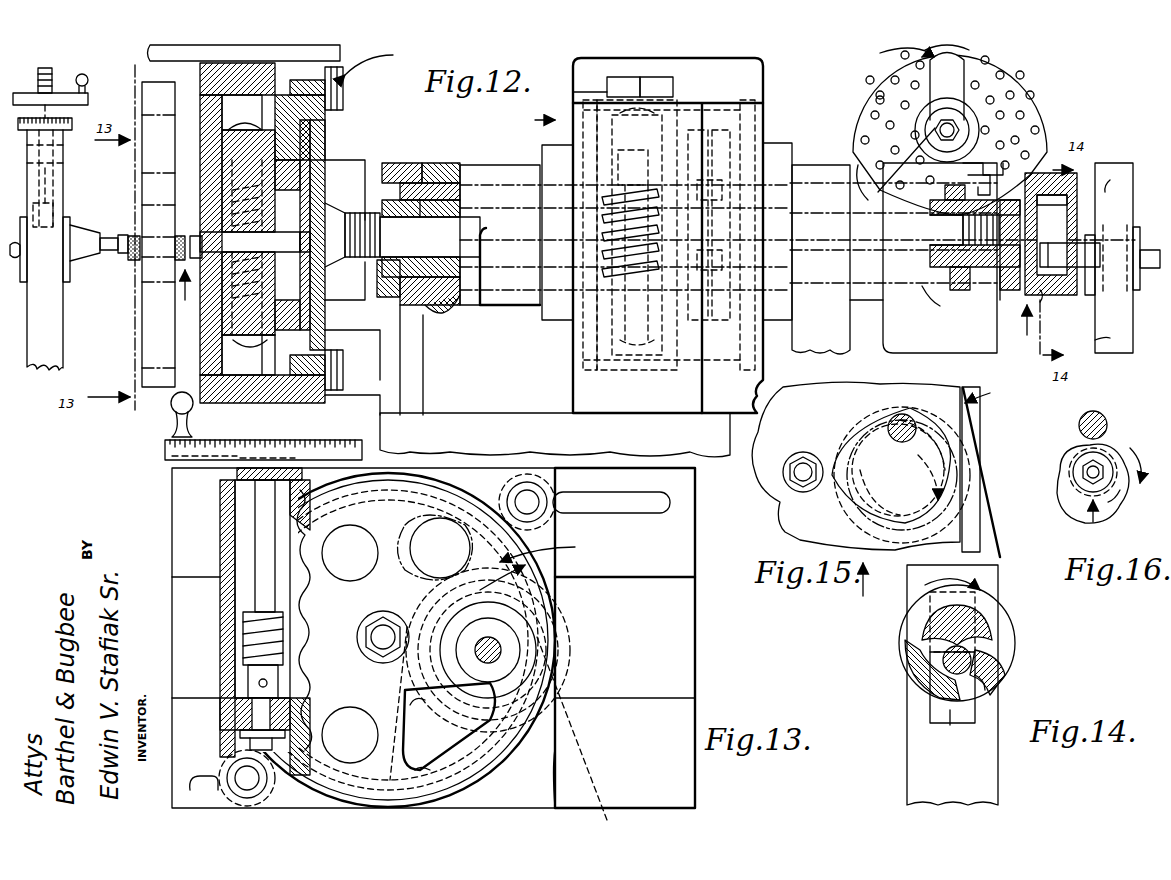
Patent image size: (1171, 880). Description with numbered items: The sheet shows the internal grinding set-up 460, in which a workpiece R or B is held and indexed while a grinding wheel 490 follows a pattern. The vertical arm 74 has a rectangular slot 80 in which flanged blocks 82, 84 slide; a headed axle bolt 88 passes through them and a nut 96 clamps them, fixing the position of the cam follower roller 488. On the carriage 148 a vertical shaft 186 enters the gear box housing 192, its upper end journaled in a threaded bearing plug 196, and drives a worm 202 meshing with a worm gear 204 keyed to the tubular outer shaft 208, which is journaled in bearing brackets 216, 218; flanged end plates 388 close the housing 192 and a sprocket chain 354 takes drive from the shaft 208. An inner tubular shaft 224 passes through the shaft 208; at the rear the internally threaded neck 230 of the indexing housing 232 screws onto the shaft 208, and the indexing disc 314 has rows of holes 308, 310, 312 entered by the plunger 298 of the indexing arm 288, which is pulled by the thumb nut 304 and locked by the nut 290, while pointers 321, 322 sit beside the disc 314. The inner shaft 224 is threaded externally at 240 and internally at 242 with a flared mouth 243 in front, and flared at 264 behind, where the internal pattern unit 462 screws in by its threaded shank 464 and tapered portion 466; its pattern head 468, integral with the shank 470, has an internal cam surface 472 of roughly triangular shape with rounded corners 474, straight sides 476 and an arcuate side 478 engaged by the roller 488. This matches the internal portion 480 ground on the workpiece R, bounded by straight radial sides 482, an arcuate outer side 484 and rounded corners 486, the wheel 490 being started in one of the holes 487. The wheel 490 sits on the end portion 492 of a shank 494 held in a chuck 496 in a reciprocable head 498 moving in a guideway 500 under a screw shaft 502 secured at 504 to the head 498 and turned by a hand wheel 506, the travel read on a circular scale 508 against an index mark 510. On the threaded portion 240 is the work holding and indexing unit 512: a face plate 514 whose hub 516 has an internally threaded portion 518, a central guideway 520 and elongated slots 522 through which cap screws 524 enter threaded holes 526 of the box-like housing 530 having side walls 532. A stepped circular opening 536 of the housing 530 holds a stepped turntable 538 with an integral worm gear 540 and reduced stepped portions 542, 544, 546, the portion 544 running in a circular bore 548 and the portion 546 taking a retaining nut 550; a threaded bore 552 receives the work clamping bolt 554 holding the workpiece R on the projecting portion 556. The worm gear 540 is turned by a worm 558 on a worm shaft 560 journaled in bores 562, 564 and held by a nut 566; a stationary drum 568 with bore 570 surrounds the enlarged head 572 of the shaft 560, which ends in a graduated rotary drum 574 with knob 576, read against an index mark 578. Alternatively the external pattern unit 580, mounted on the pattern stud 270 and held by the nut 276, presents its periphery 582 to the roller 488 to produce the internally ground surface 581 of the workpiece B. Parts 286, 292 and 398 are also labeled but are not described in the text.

In FIG. 12, the arm 74 is at (1106, 340).
In FIG. 14, the arm 74 is at (920, 767).
In FIG. 12, the elongated rectangular vertical slot 80 is at (1131, 172).
In FIG. 14, the elongated rectangular vertical slot 80 is at (930, 708).
In FIG. 12, the flanged block 82 is at (1130, 227).
In FIG. 12, the flanged block 84 is at (1086, 248).
In FIG. 12, the headed axle bolt 88 is at (1144, 248).
In FIG. 12, the nut 96 is at (1142, 270).
In FIG. 12, the carriage 148 is at (518, 413).
In FIG. 12, the vertical shaft 186 is at (646, 372).
In FIG. 12, the gear box housing 192 is at (763, 97).
In FIG. 12, the threaded bearing plug 196 is at (662, 86).
In FIG. 12, the worm 202 is at (560, 237).
In FIG. 12, the worm gear 204 is at (700, 116).
In FIG. 12, the tubular outer shaft 208 is at (434, 174).
In FIG. 12, the bearing bracket 216 is at (821, 259).
In FIG. 12, the bearing bracket 218 is at (495, 168).
In FIG. 12, the inner tubular shaft 224 is at (416, 218).
In FIG. 12, the internally threaded neck 230 is at (866, 298).
In FIG. 12, the indexing housing 232 is at (910, 343).
In FIG. 12, the external threaded portion 240 is at (368, 302).
In FIG. 12, the threaded bore 242 is at (380, 241).
In FIG. 12, the flared portion 243 is at (341, 235).
In FIG. 12, the flared portion 264 is at (1000, 275).
In FIG. 16, the pattern-holding stud 270 is at (1085, 492).
In FIG. 16, the nut 276 is at (1120, 502).
In FIG. 12, the clamp edge 286 is at (923, 135).
In FIG. 12, the indexing arm 288 is at (975, 112).
In FIG. 12, the nut 290 is at (987, 120).
In FIG. 12, the washer 292 is at (969, 97).
In FIG. 12, the reciprocable plunger 298 is at (943, 58).
In FIG. 12, the knurled thumb nut 304 is at (891, 47).
In FIG. 12, the holes 308 is at (873, 86).
In FIG. 12, the holes 310 is at (870, 93).
In FIG. 12, the holes 312 is at (866, 107).
In FIG. 12, the indexing disc 314 is at (855, 130).
In FIG. 12, the pointer 321 is at (875, 178).
In FIG. 12, the pointer 322 is at (1011, 160).
In FIG. 12, the sprocket chain 354 is at (711, 327).
In FIG. 12, the flanged end plate 388 is at (576, 130).
In FIG. 12, the plate 398 is at (763, 118).
In FIG. 12, the internal grinding set-up 460 is at (523, 121).
In FIG. 12, the internal pattern unit 462 is at (934, 250).
In FIG. 14, the internal pattern unit 462 is at (1010, 629).
In FIG. 12, the threaded shank 464 is at (962, 223).
In FIG. 12, the tapered portion 466 is at (1008, 202).
In FIG. 12, the pattern head 468 is at (1062, 296).
In FIG. 12, the shank 470 is at (1053, 206).
In FIG. 12, the internal cam surface 472 is at (1078, 193).
In FIG. 14, the internal cam surface 472 is at (998, 660).
In FIG. 14, the rounded corners 474 is at (988, 598).
In FIG. 14, the straight sides 476 is at (905, 610).
In FIG. 14, the arcuate side 478 is at (983, 670).
In FIG. 13, the internal workpiece portion 480 is at (560, 621).
In FIG. 13, the straight radial sides 482 is at (449, 726).
In FIG. 13, the arcuate outer side 484 is at (477, 770).
In FIG. 13, the rounded corners 486 is at (463, 730).
In FIG. 13, the holes 487 is at (422, 525).
In FIG. 12, the cam follower roller 488 is at (1060, 243).
In FIG. 14, the cam follower roller 488 is at (943, 655).
In FIG. 12, the grinding wheel 490 is at (130, 260).
In FIG. 13, the grinding wheel 490 is at (490, 637).
In FIG. 15, the grinding wheel 490 is at (902, 440).
In FIG. 12, the end portion 492 is at (122, 235).
In FIG. 12, the shank 494 is at (106, 238).
In FIG. 12, the chuck 496 is at (78, 260).
In FIG. 12, the vertically reciprocable head 498 is at (65, 281).
In FIG. 12, the guideway 500 is at (63, 356).
In FIG. 12, the screw shaft 502 is at (51, 73).
In FIG. 12, the securing point 504 is at (57, 192).
In FIG. 12, the hand wheel 506 is at (89, 88).
In FIG. 12, the graduated circular scale 508 is at (72, 119).
In FIG. 12, the index mark 510 is at (36, 76).
In FIG. 12, the work holding and indexing unit 512 is at (387, 54).
In FIG. 13, the work holding and indexing unit 512 is at (668, 660).
In FIG. 12, the face plate 514 is at (341, 148).
In FIG. 12, the hub 516 is at (380, 160).
In FIG. 12, the internally-threaded portion 518 is at (400, 164).
In FIG. 12, the central groove 520 is at (365, 329).
In FIG. 13, the central groove 520 is at (671, 586).
In FIG. 12, the elongated slots 522 is at (331, 400).
In FIG. 13, the elongated slots 522 is at (623, 508).
In FIG. 12, the cap screws 524 is at (343, 83).
In FIG. 13, the cap screws 524 is at (553, 487).
In FIG. 12, the threaded holes 526 is at (300, 400).
In FIG. 12, the box-like housing 530 is at (270, 401).
In FIG. 13, the box-like housing 530 is at (547, 703).
In FIG. 12, the side walls 532 is at (285, 50).
In FIG. 12, the stepped circular opening 536 is at (206, 373).
In FIG. 12, the turntable 538 is at (204, 100).
In FIG. 12, the worm gear 540 is at (225, 133).
In FIG. 13, the worm gear 540 is at (302, 573).
In FIG. 12, the stepped portion 542 is at (303, 118).
In FIG. 12, the stepped portion 544 is at (305, 140).
In FIG. 12, the stepped portion 546 is at (305, 163).
In FIG. 12, the circular bore 548 is at (297, 305).
In FIG. 12, the retaining nut 550 is at (319, 304).
In FIG. 12, the central axial threaded bore 552 is at (208, 275).
In FIG. 12, the work clamping bolt 554 is at (127, 236).
In FIG. 13, the work clamping bolt 554 is at (384, 630).
In FIG. 15, the work clamping bolt 554 is at (803, 462).
In FIG. 12, the forwardly-projecting portion 556 is at (186, 205).
In FIG. 12, the worm 558 is at (226, 162).
In FIG. 13, the worm 558 is at (220, 630).
In FIG. 13, the worm shaft 560 is at (257, 555).
In FIG. 13, the bore 562 is at (248, 718).
In FIG. 13, the bore 564 is at (235, 480).
In FIG. 13, the nut 566 is at (248, 742).
In FIG. 13, the stationary drum 568 is at (173, 463).
In FIG. 13, the bore 570 is at (195, 463).
In FIG. 13, the enlarged head 572 is at (244, 498).
In FIG. 13, the graduated rotary drum 574 is at (165, 448).
In FIG. 13, the handle 576 is at (168, 417).
In FIG. 13, the index mark 578 is at (270, 477).
In FIG. 16, the external pattern unit 580 is at (1124, 436).
In FIG. 15, the internally-ground surface 581 is at (953, 458).
In FIG. 16, the periphery 582 is at (1086, 455).
In FIG. 12, the workpiece R is at (158, 360).
In FIG. 13, the workpiece R is at (533, 565).
In FIG. 15, the workpiece B is at (966, 445).